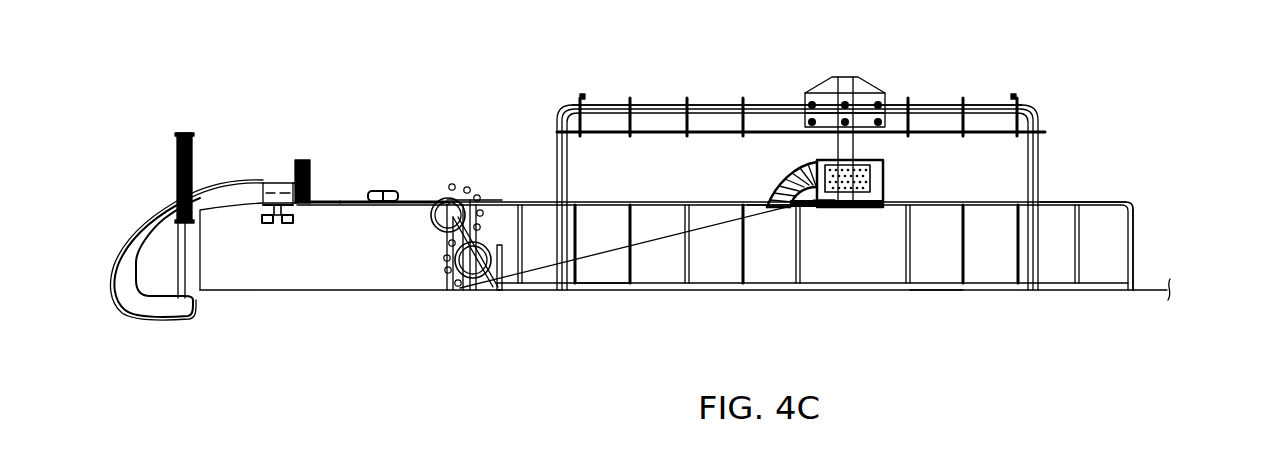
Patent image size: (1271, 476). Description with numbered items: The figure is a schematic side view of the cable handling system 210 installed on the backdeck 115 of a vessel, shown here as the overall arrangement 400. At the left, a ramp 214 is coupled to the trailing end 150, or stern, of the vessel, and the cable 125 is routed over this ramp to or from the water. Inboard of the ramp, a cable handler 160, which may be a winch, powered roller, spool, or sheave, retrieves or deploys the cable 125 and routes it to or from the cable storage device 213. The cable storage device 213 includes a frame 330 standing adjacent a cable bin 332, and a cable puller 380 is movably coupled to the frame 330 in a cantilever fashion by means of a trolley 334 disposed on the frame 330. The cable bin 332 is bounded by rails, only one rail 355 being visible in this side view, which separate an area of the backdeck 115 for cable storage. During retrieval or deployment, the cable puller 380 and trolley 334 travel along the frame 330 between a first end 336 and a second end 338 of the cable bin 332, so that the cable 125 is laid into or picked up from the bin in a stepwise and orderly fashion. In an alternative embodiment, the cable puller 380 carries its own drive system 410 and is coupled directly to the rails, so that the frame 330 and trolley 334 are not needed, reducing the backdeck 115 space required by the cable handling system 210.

The portable pump system assembly 400 is at (484, 6).
The backdeck 115 is at (1007, 292).
The cable 125 is at (601, 243).
The trailing end 150 is at (227, 290).
The cable handler 160 is at (432, 184).
The cable handling system 210 is at (973, 60).
The cable storage device 213 is at (927, 310).
The ramp 214 is at (148, 215).
The frame 330 is at (1038, 152).
The cable bin 332 is at (787, 260).
The trolley 334 is at (873, 80).
The first end 336 is at (502, 186).
The second end 338 is at (1138, 252).
The rail 355 is at (1102, 200).
The cable puller 380 is at (822, 160).
The drive system 410 is at (822, 207).